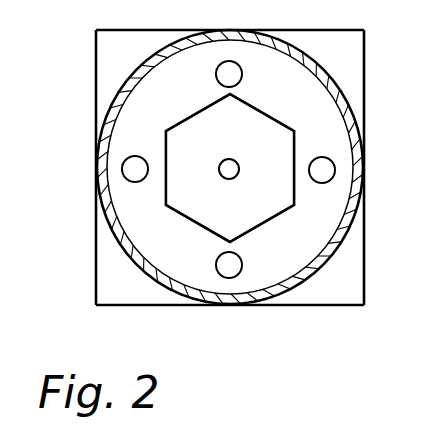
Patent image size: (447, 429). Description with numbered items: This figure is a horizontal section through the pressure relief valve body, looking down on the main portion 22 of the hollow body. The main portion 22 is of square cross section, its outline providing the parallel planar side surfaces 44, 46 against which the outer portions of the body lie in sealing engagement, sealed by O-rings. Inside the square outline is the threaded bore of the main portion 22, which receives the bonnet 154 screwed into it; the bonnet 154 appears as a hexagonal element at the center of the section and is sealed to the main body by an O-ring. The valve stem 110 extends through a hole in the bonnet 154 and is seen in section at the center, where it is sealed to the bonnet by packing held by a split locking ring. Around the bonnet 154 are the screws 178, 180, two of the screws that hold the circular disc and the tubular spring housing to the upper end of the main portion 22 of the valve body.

The main portion 22 is at (223, 167).
The planar side surface 44 is at (366, 72).
The planar side surface 46 is at (96, 64).
The valve stem 110 is at (226, 180).
The bonnet 154 is at (267, 225).
The screw 178 is at (335, 173).
The screw 180 is at (122, 170).